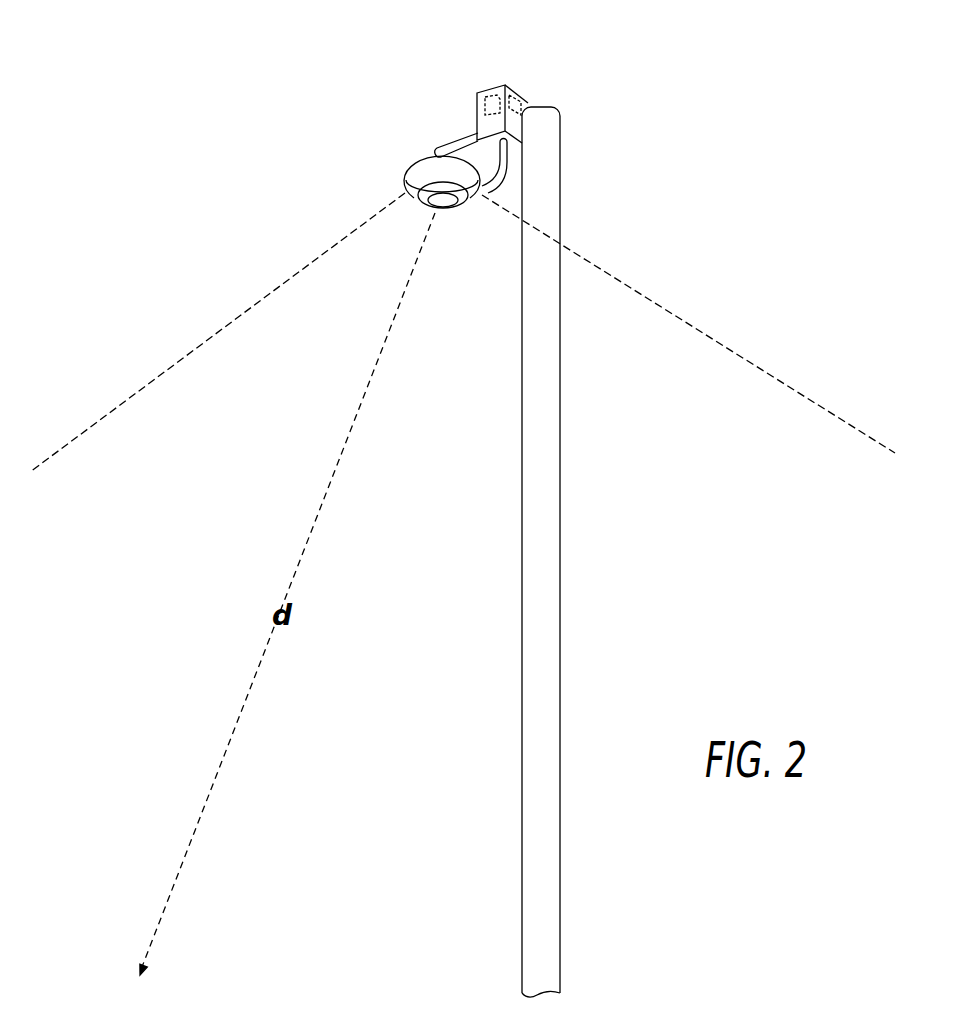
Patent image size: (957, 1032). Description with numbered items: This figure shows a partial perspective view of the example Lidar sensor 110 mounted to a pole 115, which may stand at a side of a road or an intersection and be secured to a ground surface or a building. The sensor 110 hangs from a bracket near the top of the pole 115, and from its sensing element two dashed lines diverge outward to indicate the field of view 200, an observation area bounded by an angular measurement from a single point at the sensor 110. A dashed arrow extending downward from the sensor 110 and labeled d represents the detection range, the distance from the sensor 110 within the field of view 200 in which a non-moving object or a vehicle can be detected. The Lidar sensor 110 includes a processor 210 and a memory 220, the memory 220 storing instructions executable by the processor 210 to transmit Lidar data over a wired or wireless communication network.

The sensor 110 is at (446, 146).
The pole 115 is at (522, 617).
The field of view 200 is at (288, 280).
The processor 210 is at (487, 93).
The memory 220 is at (522, 97).